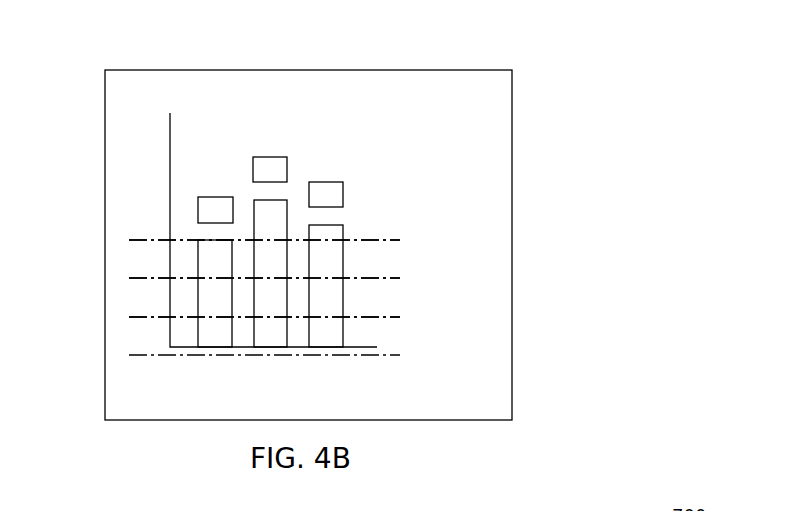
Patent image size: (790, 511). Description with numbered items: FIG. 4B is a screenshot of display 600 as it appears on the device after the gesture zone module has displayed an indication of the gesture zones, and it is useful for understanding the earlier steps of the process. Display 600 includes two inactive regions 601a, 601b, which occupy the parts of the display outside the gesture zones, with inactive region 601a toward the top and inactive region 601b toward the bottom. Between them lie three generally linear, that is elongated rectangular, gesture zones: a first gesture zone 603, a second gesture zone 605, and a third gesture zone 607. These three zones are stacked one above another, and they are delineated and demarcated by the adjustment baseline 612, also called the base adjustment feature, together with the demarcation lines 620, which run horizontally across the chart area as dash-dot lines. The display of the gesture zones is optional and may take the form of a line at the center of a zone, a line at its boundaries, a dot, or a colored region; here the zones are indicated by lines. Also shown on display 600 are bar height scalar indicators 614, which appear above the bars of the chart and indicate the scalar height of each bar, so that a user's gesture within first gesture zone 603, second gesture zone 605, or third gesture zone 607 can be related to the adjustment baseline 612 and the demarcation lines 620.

The display 600 is at (520, 43).
The inactive region 601a is at (206, 121).
The inactive region 601b is at (339, 393).
The first gesture zone 603 is at (147, 257).
The second gesture zone 605 is at (145, 301).
The third gesture zone 607 is at (148, 340).
The adjustment baseline 612 is at (400, 355).
The bar height scalar indicators 614 is at (326, 182).
The demarcation lines 620 is at (400, 240).